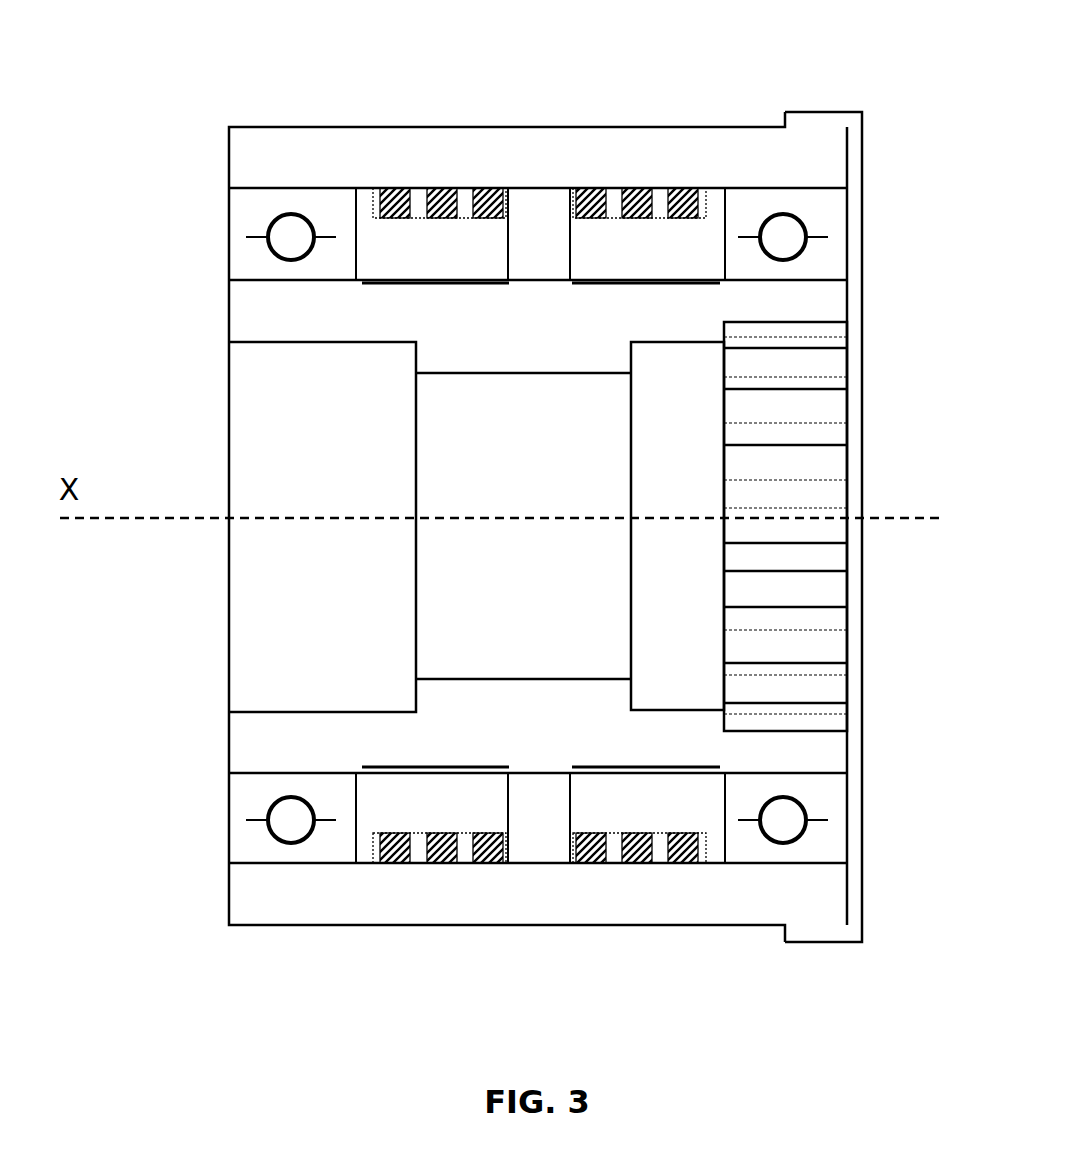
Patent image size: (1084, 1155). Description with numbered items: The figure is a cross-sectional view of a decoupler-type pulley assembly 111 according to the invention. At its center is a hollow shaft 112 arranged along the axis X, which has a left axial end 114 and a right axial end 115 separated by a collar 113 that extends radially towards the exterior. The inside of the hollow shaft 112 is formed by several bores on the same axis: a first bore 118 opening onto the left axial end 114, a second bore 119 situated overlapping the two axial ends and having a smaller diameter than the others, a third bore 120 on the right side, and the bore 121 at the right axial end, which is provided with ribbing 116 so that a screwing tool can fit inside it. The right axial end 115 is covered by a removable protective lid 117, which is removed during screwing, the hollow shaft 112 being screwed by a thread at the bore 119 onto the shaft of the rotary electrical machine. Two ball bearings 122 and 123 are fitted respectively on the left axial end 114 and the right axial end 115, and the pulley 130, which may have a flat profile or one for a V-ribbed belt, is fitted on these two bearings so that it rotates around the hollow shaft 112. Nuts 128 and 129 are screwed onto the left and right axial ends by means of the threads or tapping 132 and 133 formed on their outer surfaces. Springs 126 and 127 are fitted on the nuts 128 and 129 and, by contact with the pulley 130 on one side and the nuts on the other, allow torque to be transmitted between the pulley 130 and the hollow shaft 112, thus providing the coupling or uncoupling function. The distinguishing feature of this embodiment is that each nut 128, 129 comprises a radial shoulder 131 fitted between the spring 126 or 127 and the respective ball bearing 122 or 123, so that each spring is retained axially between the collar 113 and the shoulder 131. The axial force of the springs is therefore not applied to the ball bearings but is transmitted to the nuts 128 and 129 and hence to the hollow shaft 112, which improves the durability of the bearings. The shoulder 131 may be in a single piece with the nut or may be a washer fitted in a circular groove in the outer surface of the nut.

The pulley assembly 111 is at (196, 97).
The hollow shaft 112 is at (207, 330).
The collar 113 is at (537, 823).
The left axial end 114 is at (300, 742).
The right axial end 115 is at (785, 305).
The ribbing 116 is at (785, 728).
The removable protective lid 117 is at (855, 905).
The first bore 118 is at (315, 601).
The second bore 119 is at (540, 600).
The third bore 120 is at (690, 494).
The bore at right axial end 121 is at (785, 670).
The ball bearing 122 is at (243, 221).
The ball bearing 123 is at (815, 244).
The spring 126 is at (418, 843).
The spring 127 is at (640, 843).
The nut 128 is at (432, 256).
The nut 129 is at (645, 252).
The pulley 130 is at (290, 905).
The radial shoulder 131 is at (358, 198).
The thread or tapping 132 is at (468, 282).
The thread or tapping 133 is at (668, 282).